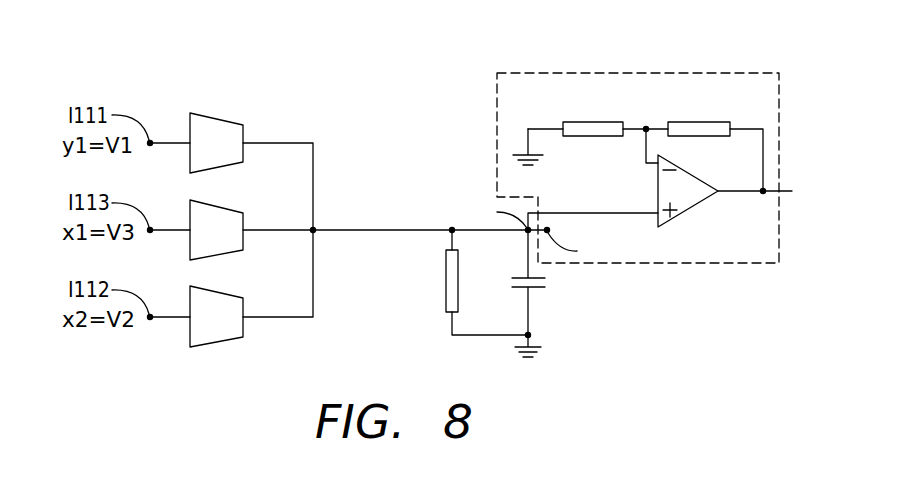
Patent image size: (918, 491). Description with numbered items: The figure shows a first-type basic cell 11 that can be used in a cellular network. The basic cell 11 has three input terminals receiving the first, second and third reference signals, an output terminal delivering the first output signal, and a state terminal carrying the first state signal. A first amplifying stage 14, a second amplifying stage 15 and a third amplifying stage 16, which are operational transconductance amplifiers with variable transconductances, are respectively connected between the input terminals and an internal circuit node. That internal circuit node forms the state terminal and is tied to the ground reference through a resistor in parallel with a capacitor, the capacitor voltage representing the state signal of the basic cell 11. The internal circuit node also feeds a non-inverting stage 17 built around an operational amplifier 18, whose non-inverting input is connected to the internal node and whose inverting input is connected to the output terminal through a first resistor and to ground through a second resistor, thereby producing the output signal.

The basic cell 11 is at (388, 148).
The first amplifying stage 14 is at (226, 122).
The second amplifying stage 15 is at (227, 293).
The third amplifying stage 16 is at (222, 208).
The non-inverting stage 17 is at (695, 73).
The amplifier 18 is at (678, 215).